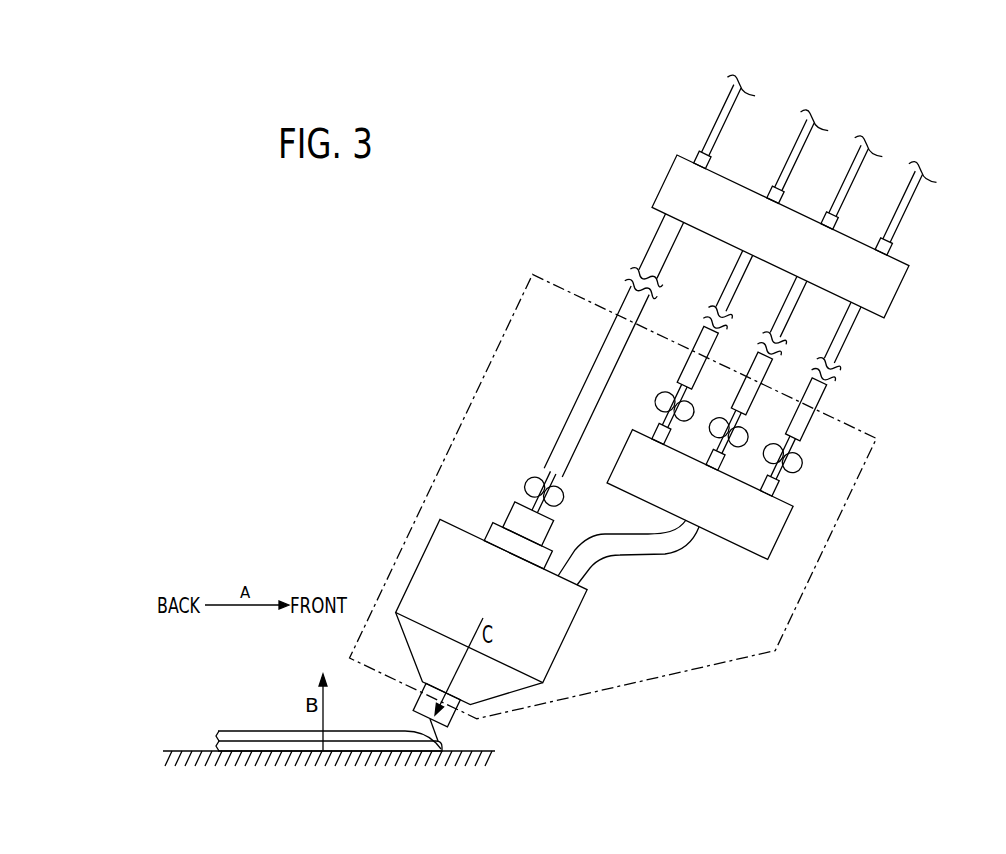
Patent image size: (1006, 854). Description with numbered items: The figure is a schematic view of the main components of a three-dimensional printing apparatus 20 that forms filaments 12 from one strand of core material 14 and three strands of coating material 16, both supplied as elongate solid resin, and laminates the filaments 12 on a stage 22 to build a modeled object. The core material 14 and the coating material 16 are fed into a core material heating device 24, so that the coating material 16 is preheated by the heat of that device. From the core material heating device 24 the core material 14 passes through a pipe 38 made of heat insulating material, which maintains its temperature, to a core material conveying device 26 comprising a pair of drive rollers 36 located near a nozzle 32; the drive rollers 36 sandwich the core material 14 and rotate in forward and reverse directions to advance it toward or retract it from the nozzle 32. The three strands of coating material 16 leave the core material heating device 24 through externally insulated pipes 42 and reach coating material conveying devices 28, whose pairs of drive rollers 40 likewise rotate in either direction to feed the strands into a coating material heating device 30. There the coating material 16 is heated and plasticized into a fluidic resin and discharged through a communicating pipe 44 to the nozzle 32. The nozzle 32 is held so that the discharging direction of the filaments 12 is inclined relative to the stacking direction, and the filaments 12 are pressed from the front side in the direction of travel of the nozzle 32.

The filament 12 is at (247, 730).
The core material 14 is at (723, 120).
The coating material 16 is at (903, 202).
The three-dimensional printing apparatus 20 is at (430, 220).
The stage 22 is at (188, 750).
The core material heating device 24 is at (672, 190).
The core material conveying device 26 is at (527, 472).
The coating material conveying devices 28 is at (762, 424).
The coating material heating device 30 is at (747, 545).
The nozzle 32 is at (420, 562).
The drive rollers 36 is at (527, 487).
The pipe 38 is at (660, 243).
The drive rollers 40 is at (665, 402).
The pipes 42 is at (837, 345).
The communicating pipe 44 is at (662, 556).